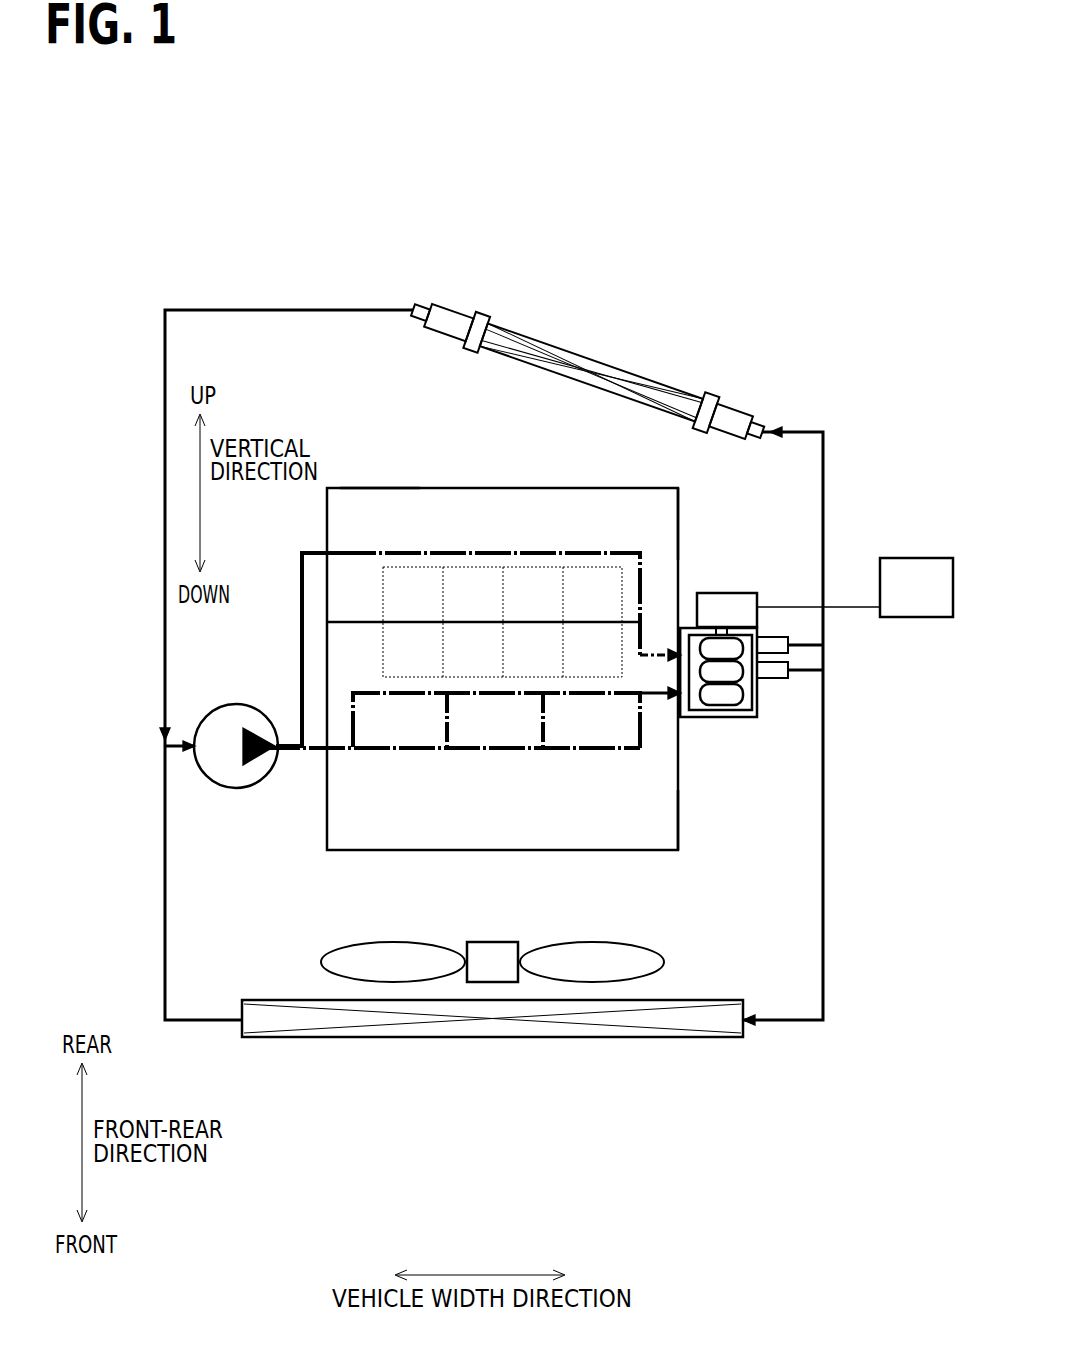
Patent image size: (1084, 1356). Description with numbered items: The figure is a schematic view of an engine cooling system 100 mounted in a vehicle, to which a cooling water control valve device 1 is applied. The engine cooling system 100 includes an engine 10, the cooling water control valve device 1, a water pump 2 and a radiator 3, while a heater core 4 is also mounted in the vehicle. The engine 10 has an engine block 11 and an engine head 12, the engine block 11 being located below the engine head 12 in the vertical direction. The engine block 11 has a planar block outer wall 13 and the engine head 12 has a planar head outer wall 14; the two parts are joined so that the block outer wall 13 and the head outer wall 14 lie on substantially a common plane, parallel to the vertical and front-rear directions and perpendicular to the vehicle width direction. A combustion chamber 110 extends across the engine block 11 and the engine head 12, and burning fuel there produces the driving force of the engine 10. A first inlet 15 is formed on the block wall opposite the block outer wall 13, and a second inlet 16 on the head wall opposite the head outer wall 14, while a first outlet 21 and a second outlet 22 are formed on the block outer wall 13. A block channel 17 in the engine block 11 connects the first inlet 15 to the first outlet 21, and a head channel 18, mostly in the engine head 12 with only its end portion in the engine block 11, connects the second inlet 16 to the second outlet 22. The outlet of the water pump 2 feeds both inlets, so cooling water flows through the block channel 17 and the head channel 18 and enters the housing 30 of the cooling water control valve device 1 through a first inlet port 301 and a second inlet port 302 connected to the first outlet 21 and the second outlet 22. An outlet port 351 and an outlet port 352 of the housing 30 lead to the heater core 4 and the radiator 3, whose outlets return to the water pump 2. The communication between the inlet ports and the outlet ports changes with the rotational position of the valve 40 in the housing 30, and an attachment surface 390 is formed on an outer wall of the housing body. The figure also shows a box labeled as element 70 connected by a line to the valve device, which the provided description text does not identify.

The engine cooling system 100 is at (660, 206).
The cooling water control valve device 1 is at (850, 772).
The water pump 2 is at (232, 704).
The radiator 3 is at (468, 1040).
The heater core 4 is at (597, 365).
The engine 10 is at (357, 488).
The engine block 11 is at (420, 851).
The engine head 12 is at (397, 488).
The block outer wall 13 is at (678, 826).
The head outer wall 14 is at (678, 505).
The first inlet 15 is at (315, 750).
The second inlet 16 is at (318, 551).
The block channel 17 is at (491, 750).
The head channel 18 is at (490, 552).
The first outlet 21 is at (695, 720).
The second outlet 22 is at (697, 600).
The housing 30 is at (762, 703).
The valve 40 is at (727, 697).
The controller (ECU) 70 is at (918, 568).
The combustion chamber 110 is at (452, 575).
The first inlet port 301 is at (678, 699).
The second inlet port 302 is at (678, 650).
The outlet port 351 is at (790, 645).
The outlet port 352 is at (790, 671).
The attachment surface 390 is at (682, 718).